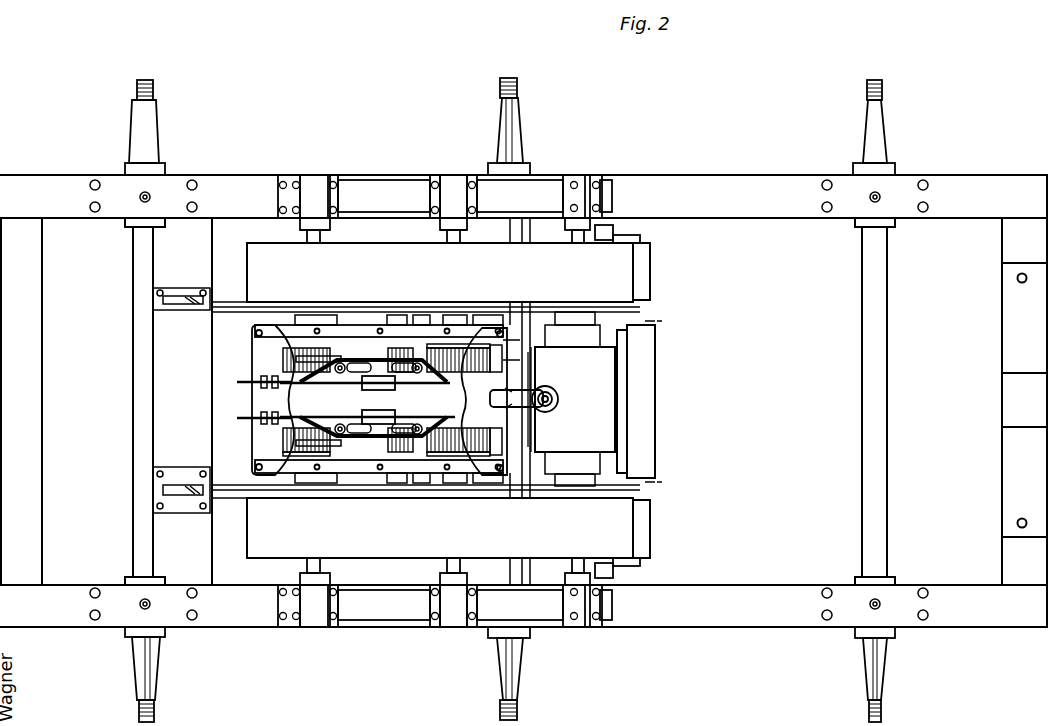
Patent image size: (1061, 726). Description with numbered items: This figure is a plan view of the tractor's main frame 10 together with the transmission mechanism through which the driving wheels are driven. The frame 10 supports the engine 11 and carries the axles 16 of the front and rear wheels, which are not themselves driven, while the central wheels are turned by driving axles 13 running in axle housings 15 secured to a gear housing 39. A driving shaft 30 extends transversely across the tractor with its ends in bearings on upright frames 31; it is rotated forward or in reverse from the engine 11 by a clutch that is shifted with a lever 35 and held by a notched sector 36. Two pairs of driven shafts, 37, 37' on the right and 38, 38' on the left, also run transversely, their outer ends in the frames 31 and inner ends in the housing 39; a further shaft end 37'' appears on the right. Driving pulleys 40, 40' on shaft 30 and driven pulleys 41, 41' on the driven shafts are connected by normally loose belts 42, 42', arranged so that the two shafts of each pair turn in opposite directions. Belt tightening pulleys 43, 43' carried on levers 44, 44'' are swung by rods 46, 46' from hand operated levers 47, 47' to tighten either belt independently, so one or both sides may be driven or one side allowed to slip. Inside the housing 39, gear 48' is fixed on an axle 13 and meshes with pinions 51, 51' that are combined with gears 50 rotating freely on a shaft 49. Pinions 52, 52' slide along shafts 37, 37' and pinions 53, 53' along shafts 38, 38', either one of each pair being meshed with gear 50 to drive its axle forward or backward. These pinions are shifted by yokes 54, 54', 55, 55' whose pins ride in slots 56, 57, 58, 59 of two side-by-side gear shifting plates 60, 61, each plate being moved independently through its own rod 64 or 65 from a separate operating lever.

The main frame 10 is at (770, 218).
The engine 11 is at (650, 389).
The driving axle 13 is at (522, 143).
The axle housing 15 is at (466, 590).
The axle 16 is at (133, 362).
The driving shaft 30 is at (578, 232).
The upright frame 31 is at (395, 190).
The lever 35 is at (545, 386).
The notched sector 36 is at (548, 410).
The driven shaft 37 is at (366, 401).
The driven shaft 37' is at (299, 592).
The bracket stem 37'' is at (435, 570).
The driven shaft 38 is at (357, 288).
The driven shaft 38' is at (439, 209).
The gear housing 39 is at (288, 330).
The driving pulley 40 is at (583, 608).
The driving pulley 40' is at (617, 191).
The driven pulley 41 is at (277, 403).
The hanger 41' is at (423, 403).
The belt 42 is at (469, 528).
The belt 42' is at (471, 272).
The belt tightening pulley 43 is at (638, 605).
The belt tightening pulley 43' is at (644, 194).
The lever 44 is at (450, 478).
The strip 44'' is at (455, 321).
The rod 46 is at (230, 513).
The rod 46' is at (230, 286).
The hand operated lever 47 is at (181, 505).
The hand operated lever 47' is at (181, 286).
The gear 48' is at (497, 318).
The shaft 49 is at (430, 460).
The gear 50 is at (493, 366).
The pinion 51 is at (395, 490).
The pinion 51' is at (392, 318).
The pinion 52 is at (277, 455).
The pinion 52' is at (465, 448).
The pinion 53 is at (257, 400).
The pinion 53' is at (458, 306).
The yoke 54 is at (319, 481).
The yoke 54' is at (442, 480).
The yoke 55 is at (318, 318).
The yoke 55' is at (451, 318).
The slot 56 is at (350, 446).
The slot 57 is at (402, 425).
The slot 58 is at (342, 358).
The slot 59 is at (373, 371).
The gear shifting plate 60 is at (380, 462).
The gear shifting plate 61 is at (365, 391).
The rod 64 is at (237, 418).
The rod 65 is at (237, 382).